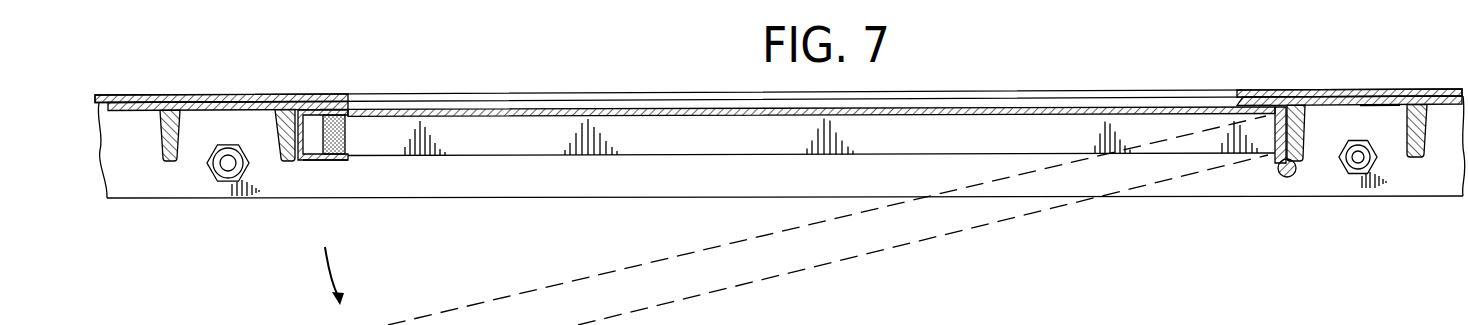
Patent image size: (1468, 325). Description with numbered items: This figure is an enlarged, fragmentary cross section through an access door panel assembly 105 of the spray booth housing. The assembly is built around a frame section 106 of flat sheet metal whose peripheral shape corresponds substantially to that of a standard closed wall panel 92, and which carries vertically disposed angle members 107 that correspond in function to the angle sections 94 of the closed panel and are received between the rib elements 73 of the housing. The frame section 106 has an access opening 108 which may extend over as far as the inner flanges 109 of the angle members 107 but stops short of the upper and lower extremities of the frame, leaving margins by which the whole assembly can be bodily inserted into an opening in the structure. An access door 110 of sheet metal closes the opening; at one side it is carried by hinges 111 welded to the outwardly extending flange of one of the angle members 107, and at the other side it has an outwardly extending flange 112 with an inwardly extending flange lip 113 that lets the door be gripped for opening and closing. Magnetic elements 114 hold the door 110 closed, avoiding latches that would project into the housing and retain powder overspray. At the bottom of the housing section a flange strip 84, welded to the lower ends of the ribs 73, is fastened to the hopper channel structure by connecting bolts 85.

The rib elements 73 is at (1374, 113).
The flange strip 84 is at (147, 182).
The connecting bolts 85 is at (225, 184).
The closed wall panel 92 is at (134, 90).
The angle sections 94 is at (147, 112).
The access door panel assembly 105 is at (533, 90).
The frame section 106 is at (321, 66).
The angle members 107 is at (294, 163).
The access opening 108 is at (348, 103).
The inner flanges 109 is at (329, 104).
The access door 110 is at (653, 139).
The hinges 111 is at (1284, 178).
The outwardly extending flange 112 is at (305, 160).
The inwardly extending flange lip 113 is at (342, 161).
The magnetic elements 114 is at (346, 136).